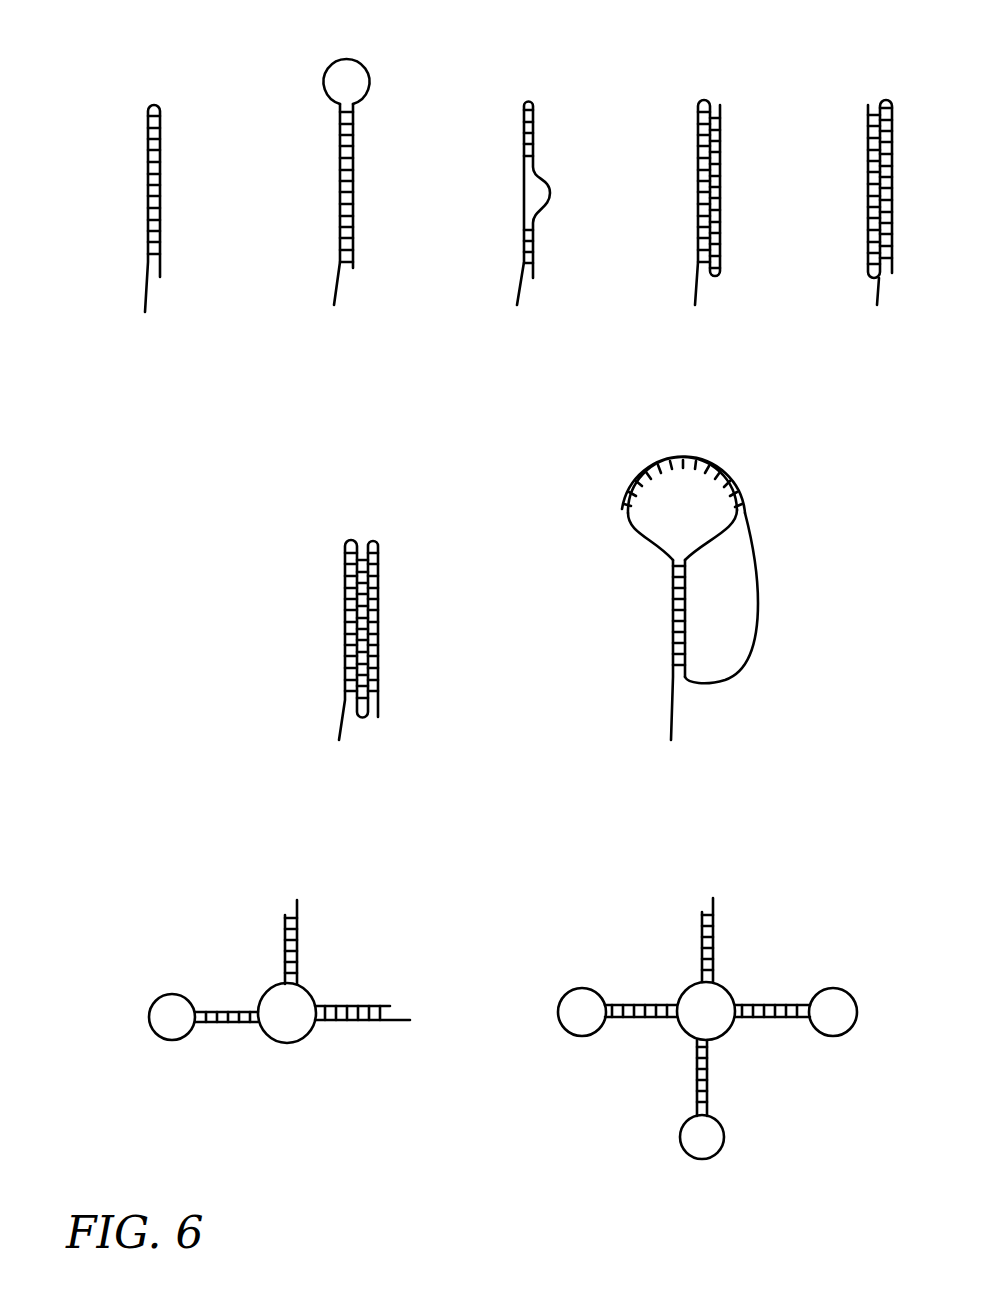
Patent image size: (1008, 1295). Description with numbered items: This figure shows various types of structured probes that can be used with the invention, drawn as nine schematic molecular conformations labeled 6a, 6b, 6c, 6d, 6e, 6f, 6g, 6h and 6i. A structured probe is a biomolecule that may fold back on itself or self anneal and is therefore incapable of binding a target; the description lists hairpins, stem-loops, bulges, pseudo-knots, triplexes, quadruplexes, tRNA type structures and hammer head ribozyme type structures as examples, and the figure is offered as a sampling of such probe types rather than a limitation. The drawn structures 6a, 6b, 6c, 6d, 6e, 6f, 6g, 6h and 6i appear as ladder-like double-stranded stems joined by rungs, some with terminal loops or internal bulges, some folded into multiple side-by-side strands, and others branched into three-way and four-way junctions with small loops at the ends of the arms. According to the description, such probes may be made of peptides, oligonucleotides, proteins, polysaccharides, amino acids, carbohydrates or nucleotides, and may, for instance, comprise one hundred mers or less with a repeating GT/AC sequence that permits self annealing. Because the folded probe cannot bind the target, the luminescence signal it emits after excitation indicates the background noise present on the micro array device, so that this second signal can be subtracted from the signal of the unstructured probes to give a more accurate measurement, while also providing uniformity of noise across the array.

The blunt double-stranded stem with single-stranded overhang 6a is at (146, 96).
The hairpin stem with terminal loop 6b is at (342, 50).
The duplex stem with internal bulge loop 6c is at (524, 88).
The folded duplex with hairpin turn at bottom 6d is at (699, 90).
The folded three-strand stem with hairpin turns 6e is at (881, 90).
The four-strand folded stem structure 6f is at (344, 525).
The stem with large terminal loop and side loop 6g is at (664, 451).
The three-way junction structure with hairpin loop 6h is at (292, 890).
The four-way junction cloverleaf structure 6i is at (706, 888).